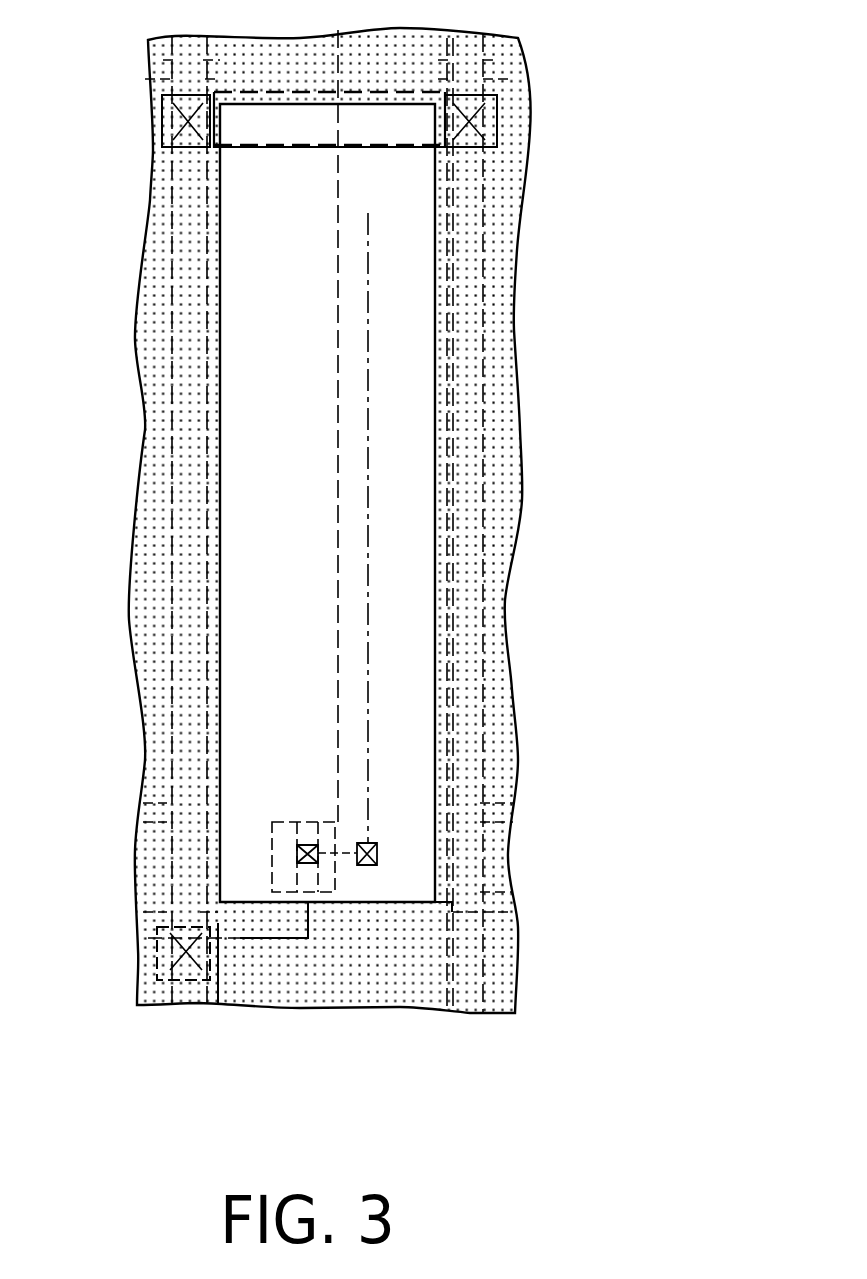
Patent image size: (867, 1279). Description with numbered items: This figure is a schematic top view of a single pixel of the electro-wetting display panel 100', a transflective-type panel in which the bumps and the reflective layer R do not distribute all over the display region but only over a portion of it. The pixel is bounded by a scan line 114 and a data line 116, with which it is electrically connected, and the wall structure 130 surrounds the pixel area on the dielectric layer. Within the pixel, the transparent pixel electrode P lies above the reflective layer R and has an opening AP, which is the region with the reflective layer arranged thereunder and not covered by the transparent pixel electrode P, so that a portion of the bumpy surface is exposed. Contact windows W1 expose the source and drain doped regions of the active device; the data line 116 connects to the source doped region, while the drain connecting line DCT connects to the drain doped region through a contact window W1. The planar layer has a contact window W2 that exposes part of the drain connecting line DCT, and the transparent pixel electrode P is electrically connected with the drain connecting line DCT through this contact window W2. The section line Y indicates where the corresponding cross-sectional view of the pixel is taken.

The opening AP is at (412, 92).
The contact window W1 is at (175, 125).
The contact window W2 is at (380, 855).
The line Y-Y' Y is at (247, 565).
The wall structure 130 is at (498, 307).
The data line 116 is at (470, 397).
The transparent pixel electrode P is at (442, 493).
The reflective layer R is at (245, 563).
The scan line 114 is at (498, 903).
The drain connecting line DCT is at (333, 862).
The electro-wetting display panel 100' is at (404, 544).